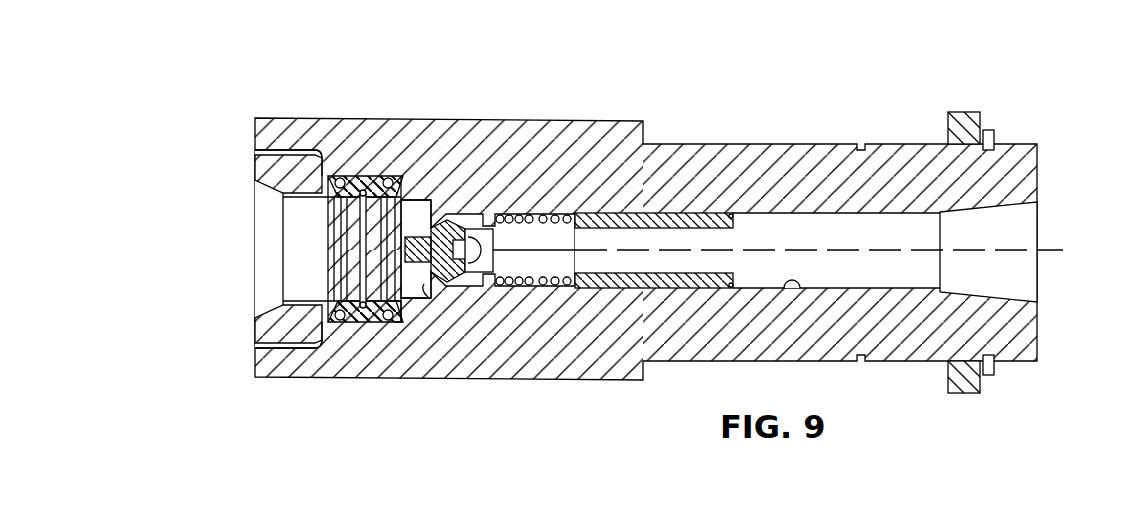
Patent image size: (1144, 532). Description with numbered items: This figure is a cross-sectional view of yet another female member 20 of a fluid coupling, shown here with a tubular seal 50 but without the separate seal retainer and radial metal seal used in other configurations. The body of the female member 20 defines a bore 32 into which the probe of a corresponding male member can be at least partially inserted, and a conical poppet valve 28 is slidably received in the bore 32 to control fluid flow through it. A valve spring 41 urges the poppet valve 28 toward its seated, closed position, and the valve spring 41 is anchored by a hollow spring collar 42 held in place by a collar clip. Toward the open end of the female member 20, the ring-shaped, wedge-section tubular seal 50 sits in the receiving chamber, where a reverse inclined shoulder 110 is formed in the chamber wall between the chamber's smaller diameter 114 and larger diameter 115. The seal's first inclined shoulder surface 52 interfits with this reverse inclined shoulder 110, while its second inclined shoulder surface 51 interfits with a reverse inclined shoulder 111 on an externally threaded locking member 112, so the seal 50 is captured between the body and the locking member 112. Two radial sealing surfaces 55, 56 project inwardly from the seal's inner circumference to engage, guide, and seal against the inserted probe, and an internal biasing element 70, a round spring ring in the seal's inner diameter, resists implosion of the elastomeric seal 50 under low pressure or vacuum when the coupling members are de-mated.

The female member 20 is at (633, 100).
The poppet valve 28 is at (440, 224).
The bore 32 is at (800, 288).
The valve spring 41 is at (547, 283).
The spring collar 42 is at (700, 170).
The tubular seal 50 is at (352, 176).
The second inclined shoulder surface 51 is at (327, 313).
The first inclined shoulder surface 52 is at (398, 323).
The radial sealing surface 55 is at (402, 194).
The radial sealing surface 56 is at (400, 197).
The internal biasing element 70 is at (357, 303).
The reverse inclined shoulder 110 is at (395, 176).
The reverse inclined shoulder 111 is at (328, 178).
The externally threaded locking member 112 is at (272, 174).
The smaller diameter 114 is at (411, 200).
The larger diameter 115 is at (353, 319).